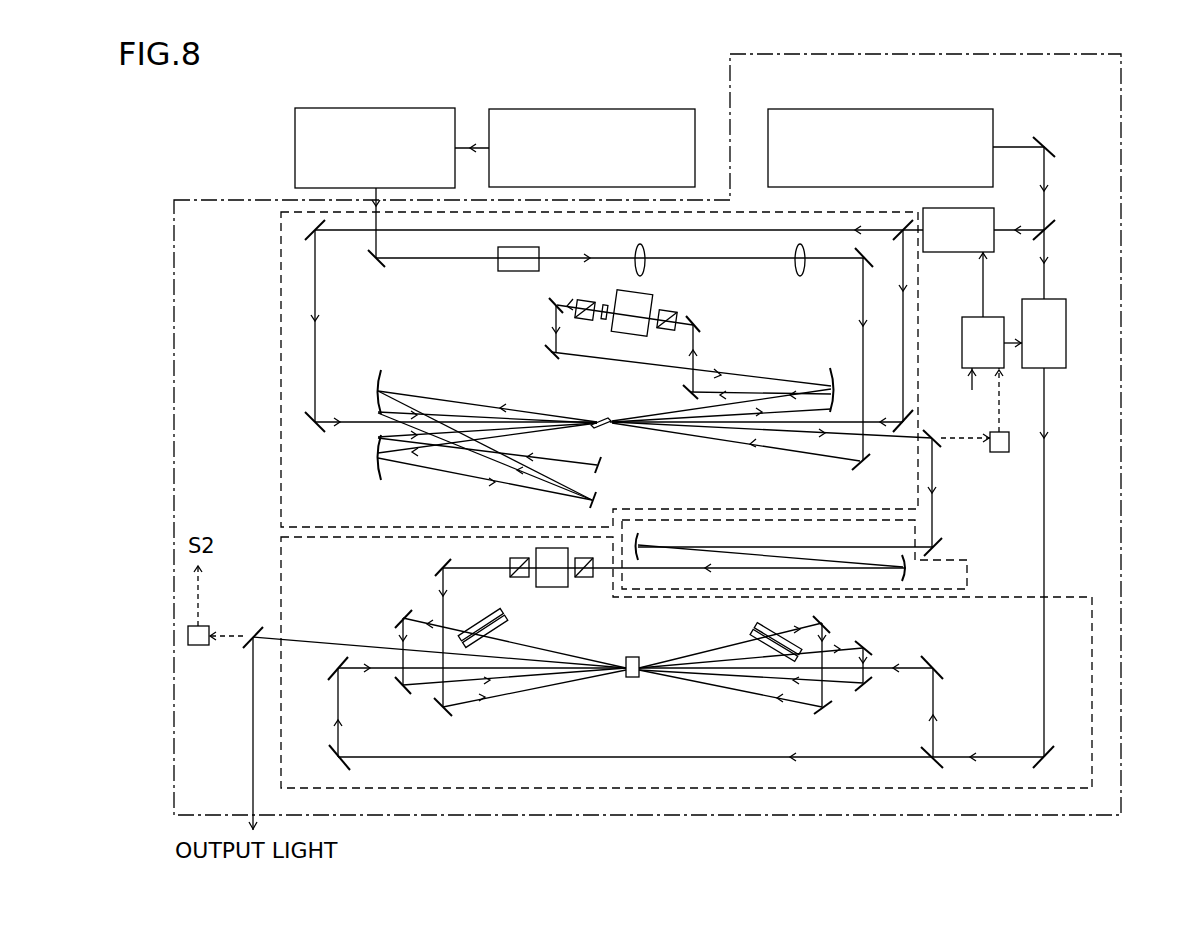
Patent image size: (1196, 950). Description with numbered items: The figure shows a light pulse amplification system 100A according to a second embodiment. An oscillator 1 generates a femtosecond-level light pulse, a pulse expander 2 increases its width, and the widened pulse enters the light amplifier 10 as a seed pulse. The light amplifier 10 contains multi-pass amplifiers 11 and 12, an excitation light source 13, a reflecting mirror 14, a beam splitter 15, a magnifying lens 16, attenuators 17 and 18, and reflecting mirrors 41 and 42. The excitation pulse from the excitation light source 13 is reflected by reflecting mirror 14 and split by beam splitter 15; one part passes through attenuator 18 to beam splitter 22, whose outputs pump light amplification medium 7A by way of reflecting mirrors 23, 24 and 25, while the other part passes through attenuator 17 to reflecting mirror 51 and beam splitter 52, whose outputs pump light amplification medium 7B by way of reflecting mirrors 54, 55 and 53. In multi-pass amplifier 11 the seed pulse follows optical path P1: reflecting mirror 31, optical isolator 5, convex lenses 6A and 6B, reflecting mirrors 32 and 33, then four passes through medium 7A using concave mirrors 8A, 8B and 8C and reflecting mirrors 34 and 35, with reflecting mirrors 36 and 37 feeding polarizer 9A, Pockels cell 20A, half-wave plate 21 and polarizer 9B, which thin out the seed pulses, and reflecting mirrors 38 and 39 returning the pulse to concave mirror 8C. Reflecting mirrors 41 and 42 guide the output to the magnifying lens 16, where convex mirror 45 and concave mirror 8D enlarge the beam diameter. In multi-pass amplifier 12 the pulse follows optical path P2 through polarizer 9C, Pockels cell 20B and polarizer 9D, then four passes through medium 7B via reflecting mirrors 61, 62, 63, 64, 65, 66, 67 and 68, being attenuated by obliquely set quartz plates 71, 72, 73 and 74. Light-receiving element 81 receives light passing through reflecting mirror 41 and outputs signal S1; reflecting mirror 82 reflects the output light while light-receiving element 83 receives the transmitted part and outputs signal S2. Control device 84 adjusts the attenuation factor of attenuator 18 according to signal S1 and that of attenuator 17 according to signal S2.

The light pulse amplification system 100A is at (1190, 79).
The light amplifier 10 is at (1122, 160).
The oscillator 1 is at (512, 109).
The pulse expander 2 is at (319, 108).
The excitation light source 13 is at (792, 109).
The reflecting mirror 14 is at (1039, 140).
The beam splitter 15 is at (1038, 240).
The attenuator 17 is at (1067, 316).
The attenuator 18 is at (948, 252).
The control device 84 is at (963, 318).
The light-receiving element 81 is at (1000, 452).
The light-receiving element 83 is at (200, 646).
The multi-pass amplifier 11 is at (281, 352).
The multi-pass amplifier 12 is at (281, 567).
The magnifying lens 16 is at (967, 578).
The optical isolator 5 is at (517, 272).
The convex lens 6A is at (647, 254).
The convex lens 6B is at (801, 278).
The light amplification medium 7A is at (605, 429).
The light amplification medium 7B is at (632, 678).
The concave mirror 8A is at (375, 379).
The concave mirror 8B is at (375, 470).
The concave mirror 8C is at (833, 368).
The concave mirror 8D is at (906, 577).
The polarizer 9A is at (667, 330).
The polarizer 9B is at (582, 320).
The polarizer 9C is at (585, 578).
The polarizer 9D is at (520, 578).
The Pockels cell 20A is at (650, 298).
The Pockels cell 20B is at (552, 588).
The half-wave plate 21 is at (604, 320).
The beam splitter 22 is at (900, 240).
The reflecting mirror 23 is at (312, 238).
The reflecting mirror 24 is at (311, 430).
The reflecting mirror 25 is at (914, 410).
The reflecting mirror 31 is at (379, 268).
The reflecting mirror 32 is at (860, 255).
The reflecting mirror 33 is at (867, 464).
The reflecting mirror 34 is at (604, 464).
The reflecting mirror 35 is at (600, 499).
The reflecting mirror 36 is at (679, 392).
The reflecting mirror 37 is at (700, 329).
The reflecting mirror 38 is at (556, 300).
The reflecting mirror 39 is at (547, 352).
The reflecting mirror 41 is at (938, 447).
The reflecting mirror 42 is at (943, 545).
The convex mirror 45 is at (641, 540).
The reflecting mirror 51 is at (1038, 764).
The beam splitter 52 is at (932, 769).
The reflecting mirror 53 is at (926, 656).
The reflecting mirror 54 is at (330, 755).
The reflecting mirror 55 is at (330, 670).
The reflecting mirror 61 is at (436, 569).
The reflecting mirror 62 is at (445, 716).
The reflecting mirror 63 is at (818, 619).
The reflecting mirror 64 is at (820, 714).
The reflecting mirror 65 is at (394, 622).
The reflecting mirror 66 is at (405, 694).
The reflecting mirror 67 is at (866, 644).
The reflecting mirror 68 is at (859, 694).
The quartz plate 71 is at (766, 625).
The quartz plate 72 is at (744, 633).
The quartz plate 73 is at (474, 622).
The quartz plate 74 is at (495, 614).
The reflecting mirror 82 is at (242, 640).
The optical path P1 is at (448, 400).
The optical path P2 is at (556, 686).
The signal S1 is at (1011, 400).
The signal S2 is at (970, 388).